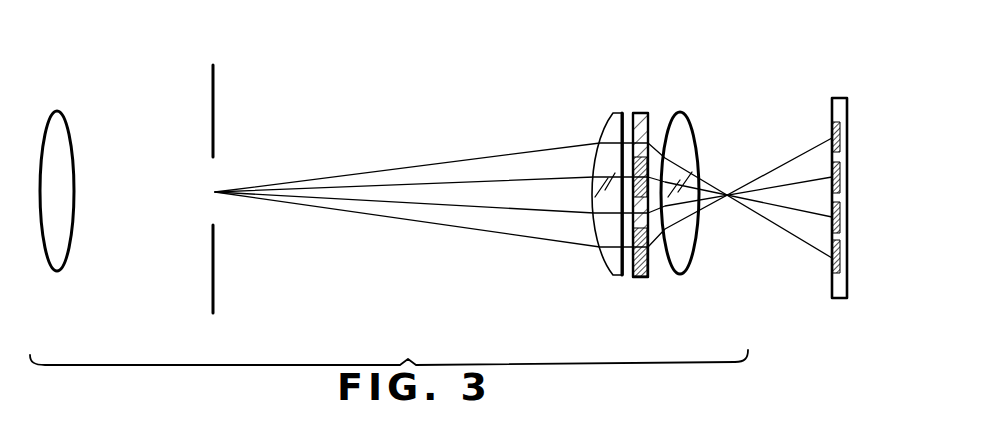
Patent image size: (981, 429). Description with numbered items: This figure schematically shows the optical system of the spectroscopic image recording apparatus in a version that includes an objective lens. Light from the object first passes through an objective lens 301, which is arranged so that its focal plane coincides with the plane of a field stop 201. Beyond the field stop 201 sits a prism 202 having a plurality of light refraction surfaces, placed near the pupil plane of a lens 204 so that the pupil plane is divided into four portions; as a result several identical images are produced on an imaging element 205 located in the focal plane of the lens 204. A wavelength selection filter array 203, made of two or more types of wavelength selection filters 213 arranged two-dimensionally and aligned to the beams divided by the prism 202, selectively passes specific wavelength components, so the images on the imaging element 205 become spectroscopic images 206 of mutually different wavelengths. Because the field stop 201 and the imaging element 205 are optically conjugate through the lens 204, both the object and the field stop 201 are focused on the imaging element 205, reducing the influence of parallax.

The objective lens 301 is at (67, 132).
The field stop 201 is at (215, 125).
The prism 202 is at (612, 113).
The wavelength selection filter array 203 is at (641, 113).
The wavelength selection filters 213 is at (637, 277).
The lens 204 is at (680, 275).
The imaging element 205 is at (832, 95).
The spectroscopic images 206 is at (832, 262).